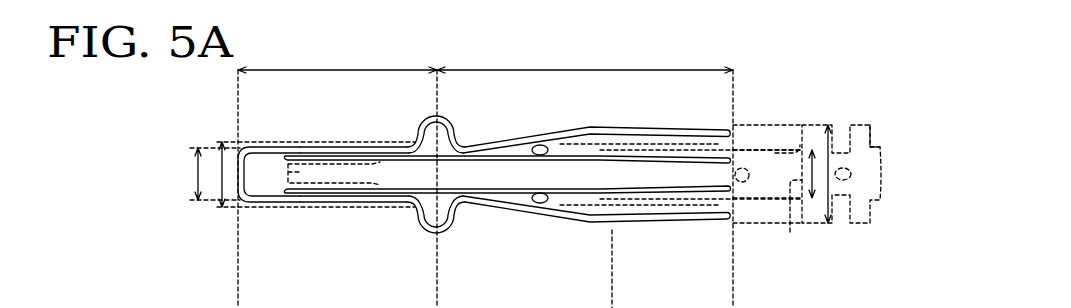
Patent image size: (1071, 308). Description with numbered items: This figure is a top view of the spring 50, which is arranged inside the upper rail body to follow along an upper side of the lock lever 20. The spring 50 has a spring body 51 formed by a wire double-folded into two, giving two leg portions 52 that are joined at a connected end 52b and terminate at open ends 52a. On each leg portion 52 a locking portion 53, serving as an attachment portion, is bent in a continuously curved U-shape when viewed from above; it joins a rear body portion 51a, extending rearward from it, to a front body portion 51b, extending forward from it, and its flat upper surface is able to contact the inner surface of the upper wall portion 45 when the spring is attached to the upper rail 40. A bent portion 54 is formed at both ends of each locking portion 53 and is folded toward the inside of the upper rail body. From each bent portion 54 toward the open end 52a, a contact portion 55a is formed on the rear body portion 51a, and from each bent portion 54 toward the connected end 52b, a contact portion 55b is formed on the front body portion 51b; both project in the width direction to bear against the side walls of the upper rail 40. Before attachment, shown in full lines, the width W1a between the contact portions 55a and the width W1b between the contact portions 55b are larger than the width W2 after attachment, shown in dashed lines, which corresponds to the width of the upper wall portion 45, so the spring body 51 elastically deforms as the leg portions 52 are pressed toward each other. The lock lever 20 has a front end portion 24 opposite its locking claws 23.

The spring 50 is at (538, 55).
The spring body 51 is at (309, 146).
The rear body portion 51a is at (585, 58).
The front body portion 51b is at (337, 58).
The leg portion 52 is at (657, 127).
The open end 52a is at (728, 127).
The connected end 52b is at (250, 172).
The locking portion 53 is at (438, 116).
The bent portion 54 is at (415, 141).
The contact portion 55a is at (614, 125).
The contact portion 55b is at (368, 142).
The front end portion 24 is at (288, 186).
The lock lever 20 is at (426, 232).
The upper rail 40 is at (797, 147).
The upper wall portion 45 is at (841, 174).
The locking claw 23 is at (874, 122).
The width between the two contact portions 55a W1a is at (840, 223).
The width between the two contact portions 55b W1b is at (220, 145).
The width between the two contact portions after attachment W2 is at (200, 200).